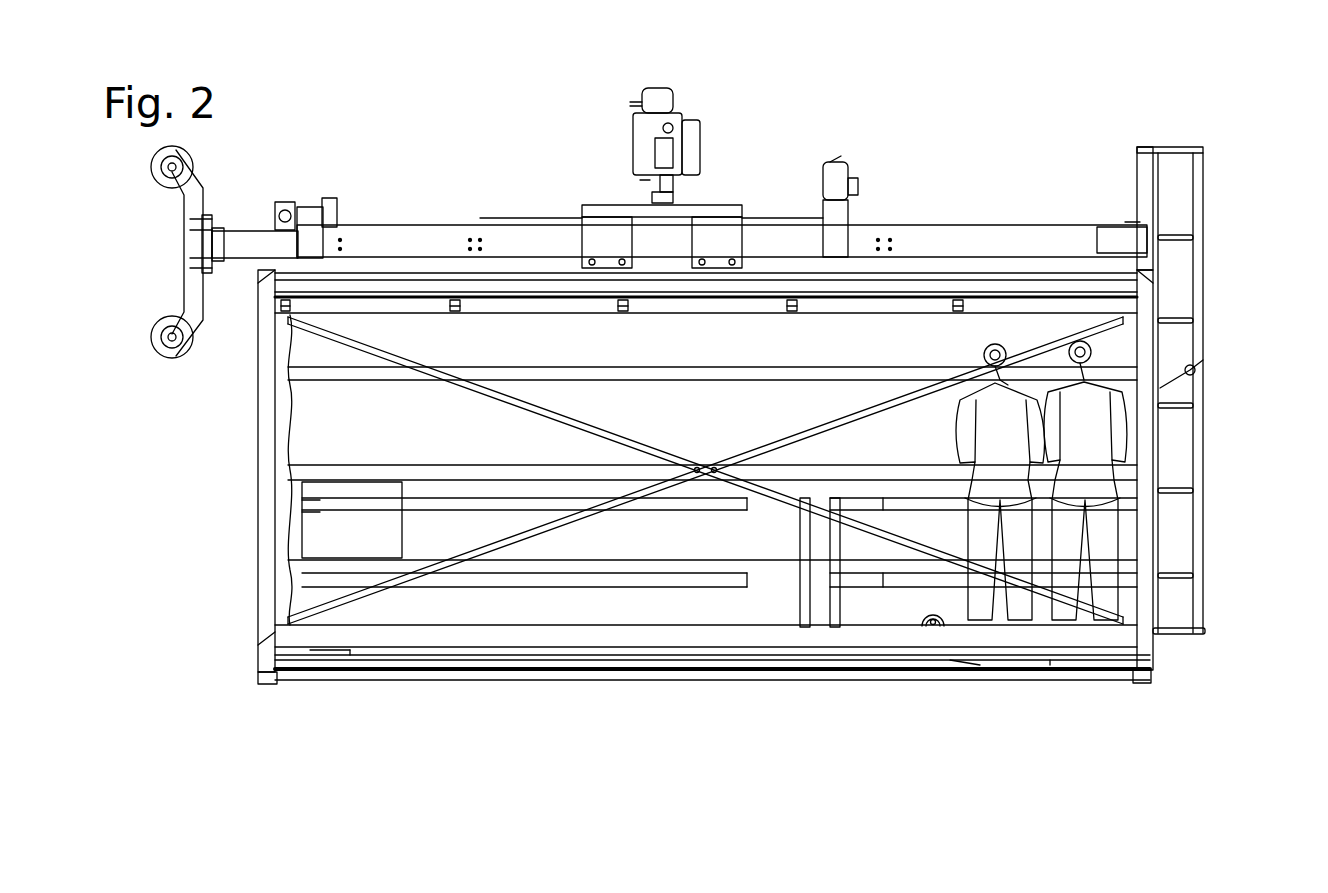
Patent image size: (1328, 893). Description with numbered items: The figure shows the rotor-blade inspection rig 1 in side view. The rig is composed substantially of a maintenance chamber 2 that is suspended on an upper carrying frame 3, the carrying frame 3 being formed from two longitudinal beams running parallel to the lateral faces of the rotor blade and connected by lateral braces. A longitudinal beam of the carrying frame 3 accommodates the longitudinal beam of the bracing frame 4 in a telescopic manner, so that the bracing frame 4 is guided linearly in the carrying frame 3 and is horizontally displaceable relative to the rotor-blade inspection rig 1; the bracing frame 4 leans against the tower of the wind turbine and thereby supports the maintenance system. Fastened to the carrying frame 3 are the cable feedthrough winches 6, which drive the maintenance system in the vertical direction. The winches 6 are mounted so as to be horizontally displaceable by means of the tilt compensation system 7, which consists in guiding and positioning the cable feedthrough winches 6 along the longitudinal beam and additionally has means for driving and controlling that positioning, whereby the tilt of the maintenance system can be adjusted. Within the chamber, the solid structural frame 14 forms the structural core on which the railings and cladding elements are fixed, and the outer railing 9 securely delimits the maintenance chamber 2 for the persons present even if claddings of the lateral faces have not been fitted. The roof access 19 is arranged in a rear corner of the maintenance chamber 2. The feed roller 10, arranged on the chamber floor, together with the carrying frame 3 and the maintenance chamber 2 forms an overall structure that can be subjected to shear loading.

The rotor-blade inspection rig 1 is at (728, 398).
The maintenance chamber 2 is at (659, 509).
The carrying frame 3 is at (413, 248).
The bracing frame 4 is at (244, 248).
The cable feedthrough winches 6 is at (653, 157).
The tilt compensation system 7 is at (598, 226).
The outer railing 9 is at (333, 472).
The feed roller 10 is at (930, 628).
The structural frame 14 is at (270, 578).
The roof access 19 is at (1196, 273).